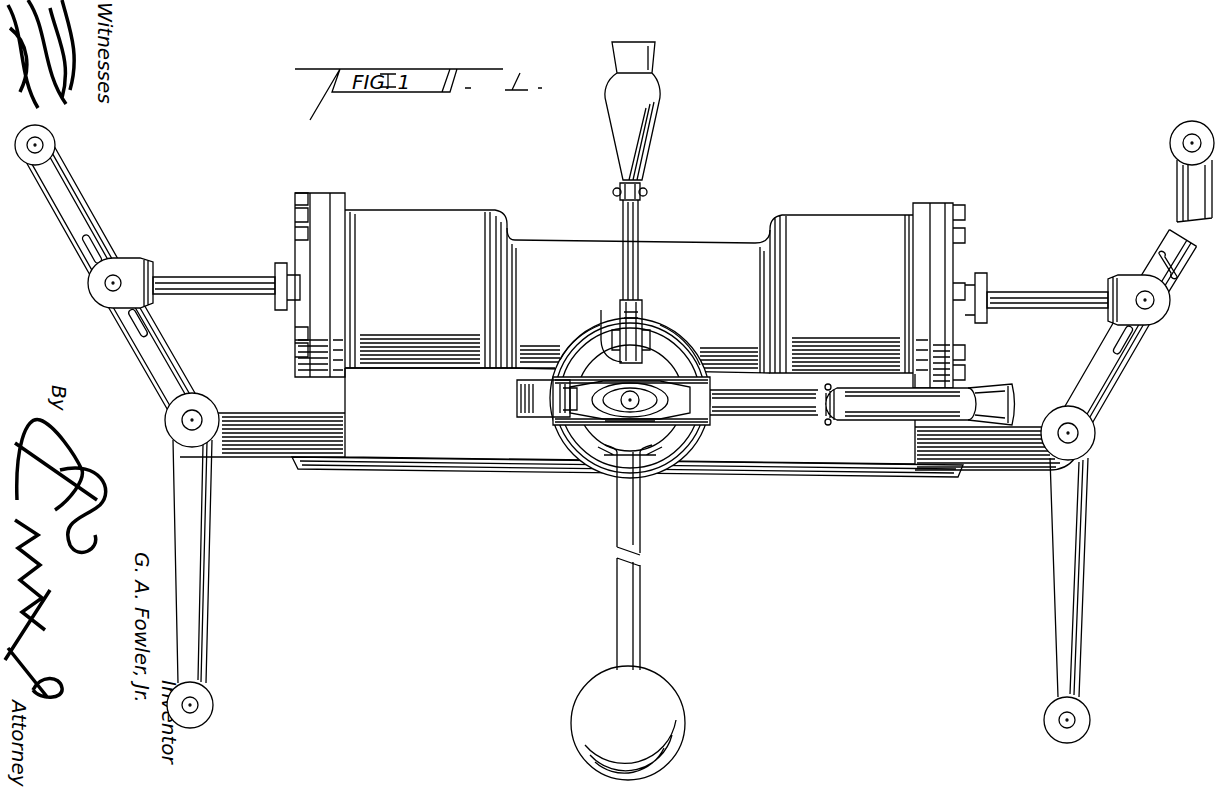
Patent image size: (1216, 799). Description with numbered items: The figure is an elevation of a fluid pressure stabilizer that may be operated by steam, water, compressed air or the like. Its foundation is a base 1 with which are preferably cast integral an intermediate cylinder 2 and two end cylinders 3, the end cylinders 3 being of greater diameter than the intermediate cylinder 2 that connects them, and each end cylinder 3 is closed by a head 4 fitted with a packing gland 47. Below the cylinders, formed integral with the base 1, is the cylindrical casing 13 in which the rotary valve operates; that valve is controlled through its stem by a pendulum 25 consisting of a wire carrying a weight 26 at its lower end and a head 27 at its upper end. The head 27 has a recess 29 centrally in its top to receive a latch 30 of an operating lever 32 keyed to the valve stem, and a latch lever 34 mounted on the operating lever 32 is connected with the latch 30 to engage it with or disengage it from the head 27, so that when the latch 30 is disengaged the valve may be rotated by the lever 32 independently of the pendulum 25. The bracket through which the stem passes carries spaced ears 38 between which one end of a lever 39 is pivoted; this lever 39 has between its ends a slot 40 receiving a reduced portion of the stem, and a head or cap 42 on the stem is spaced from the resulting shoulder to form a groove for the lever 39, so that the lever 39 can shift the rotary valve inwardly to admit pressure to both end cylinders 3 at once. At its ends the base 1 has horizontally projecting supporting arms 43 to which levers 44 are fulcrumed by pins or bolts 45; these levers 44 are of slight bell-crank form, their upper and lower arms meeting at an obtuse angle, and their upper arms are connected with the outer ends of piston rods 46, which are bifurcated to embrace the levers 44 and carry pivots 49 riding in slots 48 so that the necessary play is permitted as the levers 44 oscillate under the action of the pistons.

The base 1 is at (383, 455).
The intermediate cylinder 2 is at (528, 243).
The end cylinder 3 is at (378, 214).
The head 4 is at (315, 197).
The cylindrical casing 13 is at (658, 473).
The pendulum 25 is at (642, 603).
The weight 26 is at (650, 672).
The head 27 is at (657, 367).
The recess 29 is at (601, 310).
The latch 30 is at (640, 327).
The operating lever 32 is at (637, 235).
The latch lever 34 is at (650, 142).
The spaced ears 38 is at (523, 422).
The lever 39 is at (752, 428).
The slot 40 is at (608, 407).
The head or cap 42 is at (630, 409).
The supporting arms 43 is at (260, 458).
The levers 44 is at (167, 355).
The pins or bolts 45 is at (192, 415).
The piston rods 46 is at (200, 292).
The packing glands 47 is at (278, 268).
The slots 48 is at (98, 253).
The pivots 49 is at (117, 283).